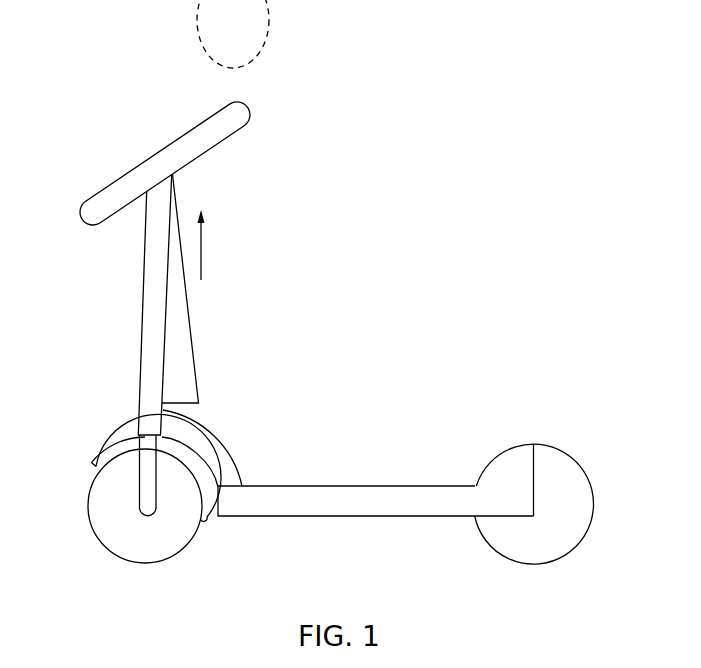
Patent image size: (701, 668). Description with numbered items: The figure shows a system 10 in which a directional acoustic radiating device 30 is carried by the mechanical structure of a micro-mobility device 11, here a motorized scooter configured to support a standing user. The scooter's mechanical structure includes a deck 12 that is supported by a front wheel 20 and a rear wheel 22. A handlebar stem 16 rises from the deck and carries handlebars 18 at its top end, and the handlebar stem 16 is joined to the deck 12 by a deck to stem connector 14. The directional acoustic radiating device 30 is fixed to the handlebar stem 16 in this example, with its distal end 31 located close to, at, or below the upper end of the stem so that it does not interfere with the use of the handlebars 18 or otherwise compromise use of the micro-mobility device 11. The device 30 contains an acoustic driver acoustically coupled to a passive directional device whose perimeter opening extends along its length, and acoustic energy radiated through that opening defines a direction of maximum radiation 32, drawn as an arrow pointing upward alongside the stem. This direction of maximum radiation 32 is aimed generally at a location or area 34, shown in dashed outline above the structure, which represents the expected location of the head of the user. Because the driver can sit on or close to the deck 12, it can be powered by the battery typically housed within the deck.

The system 10 is at (313, 365).
The micro-mobility device 11 is at (291, 439).
The deck 12 is at (322, 502).
The deck to stem connector 14 is at (213, 432).
The handlebar stem 16 is at (143, 300).
The handlebars 18 is at (111, 191).
The wheel 20 is at (107, 507).
The wheel 22 is at (513, 533).
The directional acoustic radiating device 30 is at (198, 371).
The distal end 31 is at (173, 199).
The direction of maximum radiation 32 is at (203, 254).
The location or area 34 is at (271, 25).